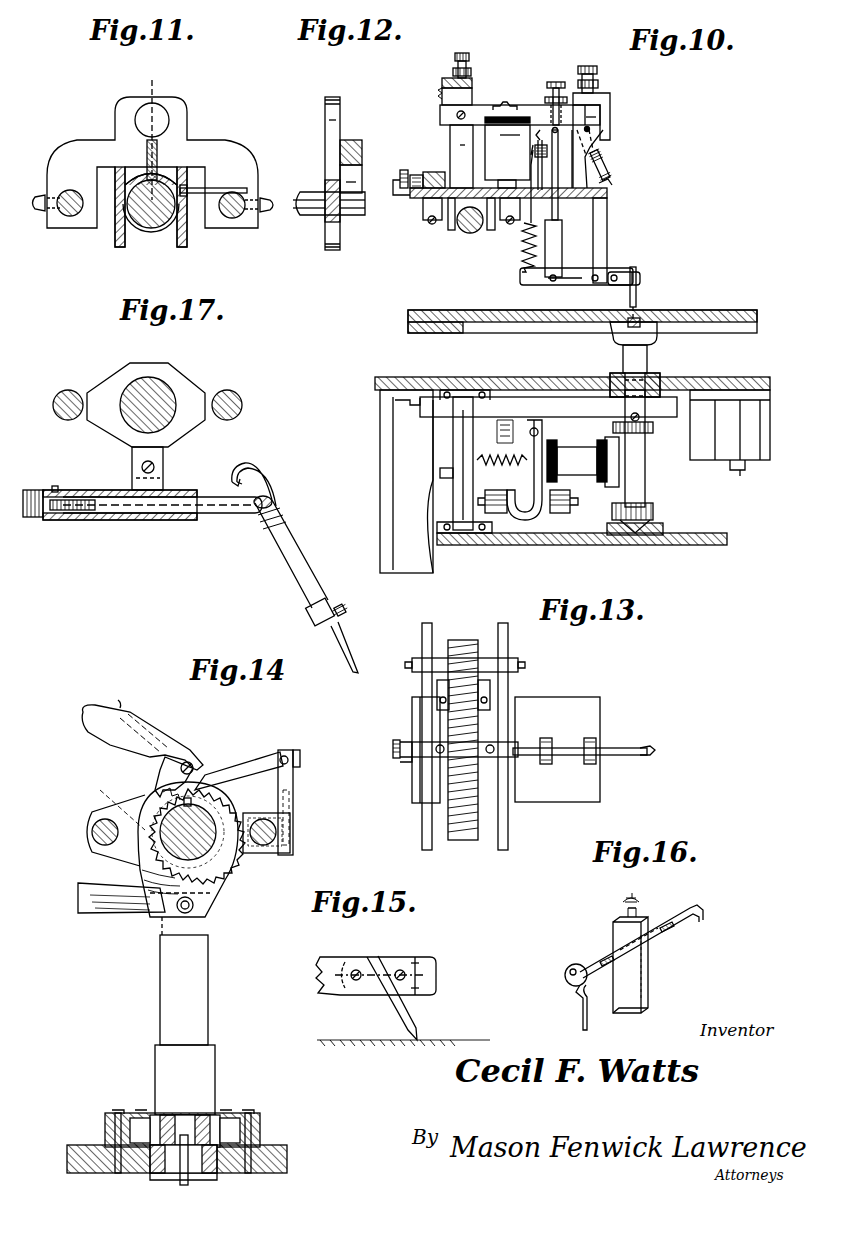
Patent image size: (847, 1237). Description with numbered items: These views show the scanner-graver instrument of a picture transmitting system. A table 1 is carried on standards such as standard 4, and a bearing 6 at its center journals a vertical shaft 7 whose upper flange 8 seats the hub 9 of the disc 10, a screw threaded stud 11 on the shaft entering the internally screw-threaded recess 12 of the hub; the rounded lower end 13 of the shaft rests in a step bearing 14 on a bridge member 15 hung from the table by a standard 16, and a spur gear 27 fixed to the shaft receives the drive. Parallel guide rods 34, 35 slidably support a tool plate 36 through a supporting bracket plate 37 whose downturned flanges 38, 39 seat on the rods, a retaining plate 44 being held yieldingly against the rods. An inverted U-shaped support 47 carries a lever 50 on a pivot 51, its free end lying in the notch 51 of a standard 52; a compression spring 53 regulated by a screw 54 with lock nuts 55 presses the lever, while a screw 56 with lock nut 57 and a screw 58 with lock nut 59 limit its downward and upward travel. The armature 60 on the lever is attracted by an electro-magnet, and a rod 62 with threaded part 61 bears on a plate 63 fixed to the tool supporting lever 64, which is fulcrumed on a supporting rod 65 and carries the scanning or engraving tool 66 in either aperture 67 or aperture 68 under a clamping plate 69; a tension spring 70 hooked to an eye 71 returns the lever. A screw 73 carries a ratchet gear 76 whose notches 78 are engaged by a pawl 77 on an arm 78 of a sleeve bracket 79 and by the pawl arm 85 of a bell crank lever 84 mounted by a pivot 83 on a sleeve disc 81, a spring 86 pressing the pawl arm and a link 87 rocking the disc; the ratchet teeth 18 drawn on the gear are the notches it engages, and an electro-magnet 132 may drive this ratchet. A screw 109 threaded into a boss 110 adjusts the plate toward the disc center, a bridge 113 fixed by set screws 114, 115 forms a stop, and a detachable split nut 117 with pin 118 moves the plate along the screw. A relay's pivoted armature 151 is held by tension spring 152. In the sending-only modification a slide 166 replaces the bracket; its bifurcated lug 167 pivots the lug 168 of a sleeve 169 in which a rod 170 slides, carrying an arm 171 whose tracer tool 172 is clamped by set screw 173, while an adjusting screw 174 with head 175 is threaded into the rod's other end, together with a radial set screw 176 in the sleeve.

In FIG. 10, the table 1 is at (406, 378).
In FIG. 10, the standard 4 is at (380, 445).
In FIG. 10, the bearing 6 is at (660, 380).
In FIG. 10, the vertical shaft 7 is at (646, 455).
In FIG. 13, the flange 8 is at (393, 745).
In FIG. 10, the hub 9 is at (660, 328).
In FIG. 10, the disc 10 is at (728, 318).
In FIG. 10, the screw threaded stud 11 is at (645, 322).
In FIG. 11, the internally screw-threaded recess 12 is at (150, 80).
In FIG. 10, the internally screw-threaded recess 12 is at (628, 318).
In FIG. 10, the lower end of shaft 13 is at (625, 545).
In FIG. 10, the step bearing 14 is at (690, 524).
In FIG. 10, the bridge member 15 is at (732, 522).
In FIG. 10, the standard 16 is at (458, 441).
In FIG. 14, the ratchet gear 18 is at (222, 850).
In FIG. 10, the spur gear 27 is at (674, 500).
In FIG. 11, the guide rod 34 is at (231, 219).
In FIG. 10, the guide rod 34 is at (426, 219).
In FIG. 17, the guide rod 34 is at (80, 392).
In FIG. 14, the guide rod 34 is at (92, 836).
In FIG. 13, the guide rod 34 is at (421, 641).
In FIG. 11, the guide rod 35 is at (70, 218).
In FIG. 12, the guide rod 35 is at (310, 216).
In FIG. 10, the guide rod 35 is at (510, 222).
In FIG. 17, the guide rod 35 is at (243, 400).
In FIG. 14, the guide rod 35 is at (280, 830).
In FIG. 13, the guide rod 35 is at (509, 641).
In FIG. 10, the tool plate 36 is at (609, 193).
In FIG. 13, the tool plate 36 is at (590, 700).
In FIG. 10, the supporting bracket plate 37 is at (398, 198).
In FIG. 10, the downturned flange 38 is at (430, 232).
In FIG. 13, the downturned flange 38 is at (412, 700).
In FIG. 10, the downturned flange 39 is at (514, 225).
In FIG. 13, the downturned flange 39 is at (518, 700).
In FIG. 13, the retaining plate 44 is at (412, 762).
In FIG. 10, the inverted U-shaped support 47 is at (472, 90).
In FIG. 10, the lever 50 is at (490, 111).
In FIG. 10, the pivot / notch 51 is at (456, 116).
In FIG. 10, the standard 52 is at (611, 108).
In FIG. 10, the compression spring 53 is at (441, 94).
In FIG. 10, the screw 54 is at (455, 62).
In FIG. 10, the lock nuts 55 is at (452, 73).
In FIG. 10, the screw 56 is at (604, 162).
In FIG. 10, the lock nut 57 is at (609, 151).
In FIG. 10, the screw 58 is at (590, 66).
In FIG. 10, the lock nut 59 is at (600, 83).
In FIG. 10, the armature 60 is at (540, 125).
In FIG. 10, the screw threaded part 61 is at (568, 72).
In FIG. 10, the rod 62 is at (558, 211).
In FIG. 10, the plate 63 is at (562, 234).
In FIG. 13, the plate 63 is at (552, 764).
In FIG. 10, the tool supporting lever 64 is at (582, 263).
In FIG. 13, the tool supporting lever 64 is at (610, 742).
In FIG. 15, the tool supporting lever 64 is at (402, 957).
In FIG. 10, the supporting rod 65 is at (608, 212).
In FIG. 13, the supporting rod 65 is at (597, 764).
In FIG. 10, the scanning or engraving tool 66 is at (636, 295).
In FIG. 13, the scanning or engraving tool 66 is at (648, 738).
In FIG. 15, the scanning or engraving tool 66 is at (398, 1017).
In FIG. 10, the aperture 67 is at (622, 270).
In FIG. 15, the aperture 67 is at (372, 957).
In FIG. 10, the aperture 68 is at (637, 270).
In FIG. 15, the aperture 68 is at (417, 958).
In FIG. 10, the clamping plate 69 is at (641, 277).
In FIG. 15, the clamping plate 69 is at (345, 962).
In FIG. 10, the tension spring 70 is at (531, 170).
In FIG. 16, the tension spring 70 is at (583, 1012).
In FIG. 10, the eye 71 is at (534, 152).
In FIG. 16, the eye 71 is at (602, 950).
In FIG. 11, the screw 73 is at (152, 225).
In FIG. 14, the screw 73 is at (172, 845).
In FIG. 13, the screw 73 is at (480, 628).
In FIG. 14, the ratchet gear 76 is at (215, 878).
In FIG. 14, the pawl 77 is at (258, 762).
In FIG. 14, the arm / notches 78 is at (293, 775).
In FIG. 14, the sleeve bracket 79 is at (268, 816).
In FIG. 14, the sleeve disc 81 is at (155, 881).
In FIG. 14, the pivot 83 is at (195, 762).
In FIG. 14, the bell crank lever 84 is at (168, 730).
In FIG. 14, the pawl arm 85 is at (158, 780).
In FIG. 14, the spring 86 is at (118, 705).
In FIG. 14, the link 87 is at (78, 890).
In FIG. 10, the screw 109 is at (409, 160).
In FIG. 13, the screw 109 is at (400, 738).
In FIG. 10, the internally screw-threaded boss 110 is at (438, 172).
In FIG. 11, the bridge 113 is at (100, 138).
In FIG. 12, the bridge 113 is at (378, 127).
In FIG. 11, the set screw 114 is at (36, 196).
In FIG. 11, the set screw 115 is at (272, 197).
In FIG. 11, the detachable split nut 117 is at (176, 124).
In FIG. 12, the detachable split nut 117 is at (326, 109).
In FIG. 11, the pin 118 is at (203, 187).
In FIG. 10, the electro-magnet 132 is at (594, 436).
In FIG. 10, the pivoted armature 151 is at (530, 484).
In FIG. 10, the tension spring 152 is at (522, 463).
In FIG. 17, the slide 166 is at (168, 365).
In FIG. 17, the bifurcated lug 167 is at (164, 452).
In FIG. 17, the lug 168 is at (164, 474).
In FIG. 17, the sleeve 169 is at (120, 490).
In FIG. 17, the rod 170 is at (210, 513).
In FIG. 17, the arm 171 is at (290, 578).
In FIG. 17, the tracer tool 172 is at (340, 648).
In FIG. 17, the set screw 173 is at (355, 592).
In FIG. 17, the adjusting screw 174 is at (62, 512).
In FIG. 17, the head 175 is at (30, 518).
In FIG. 17, the screw 176 is at (68, 470).